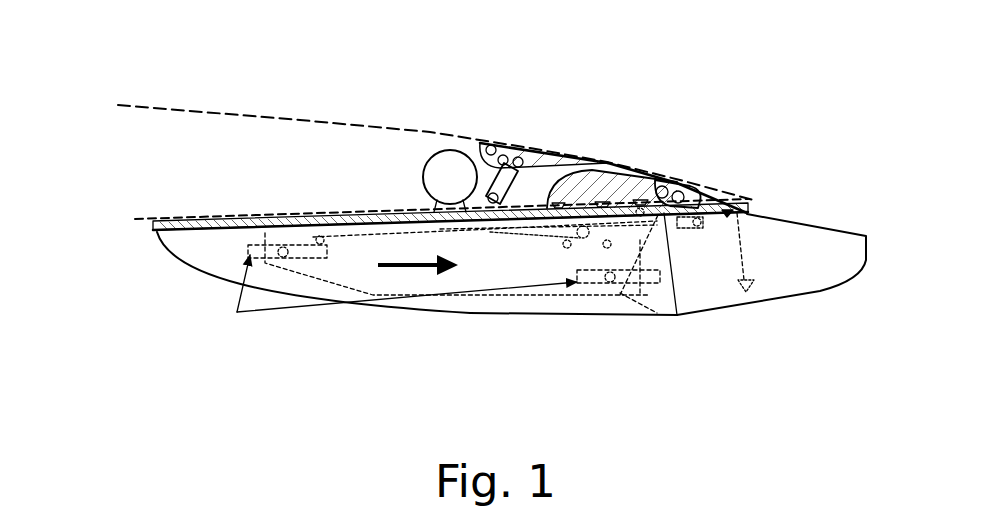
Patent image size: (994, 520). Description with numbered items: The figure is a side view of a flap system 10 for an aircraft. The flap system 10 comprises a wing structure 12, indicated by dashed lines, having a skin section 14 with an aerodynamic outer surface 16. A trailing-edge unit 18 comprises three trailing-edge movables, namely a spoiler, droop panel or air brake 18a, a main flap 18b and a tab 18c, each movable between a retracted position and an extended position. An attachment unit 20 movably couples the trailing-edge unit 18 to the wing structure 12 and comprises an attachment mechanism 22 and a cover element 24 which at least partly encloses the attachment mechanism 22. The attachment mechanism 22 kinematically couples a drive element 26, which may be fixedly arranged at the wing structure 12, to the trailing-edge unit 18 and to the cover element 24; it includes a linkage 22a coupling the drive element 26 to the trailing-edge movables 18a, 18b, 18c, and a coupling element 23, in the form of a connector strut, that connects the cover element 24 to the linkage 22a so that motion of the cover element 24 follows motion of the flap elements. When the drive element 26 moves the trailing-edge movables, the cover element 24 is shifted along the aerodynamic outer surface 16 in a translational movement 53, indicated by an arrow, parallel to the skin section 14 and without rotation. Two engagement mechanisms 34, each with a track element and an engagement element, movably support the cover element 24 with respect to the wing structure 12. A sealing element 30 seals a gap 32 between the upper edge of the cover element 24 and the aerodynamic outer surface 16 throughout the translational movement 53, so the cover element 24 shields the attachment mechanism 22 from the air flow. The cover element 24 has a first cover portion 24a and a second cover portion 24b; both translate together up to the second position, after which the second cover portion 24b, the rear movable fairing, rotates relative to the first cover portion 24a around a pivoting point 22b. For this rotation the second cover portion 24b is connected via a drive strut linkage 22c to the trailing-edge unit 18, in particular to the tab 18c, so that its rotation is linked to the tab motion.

The flap system 10 is at (287, 96).
The wing structure 12 is at (352, 128).
The skin section 14 is at (198, 222).
The aerodynamic outer surface 16 is at (182, 236).
The trailing-edge unit 18 is at (671, 136).
The spoiler, droop panel or air brake 18a is at (543, 157).
The main flap 18b is at (645, 172).
The tab 18c is at (697, 182).
The attachment unit 20 is at (558, 315).
The attachment mechanism 22 is at (477, 234).
The linkage 22a is at (490, 222).
The pivoting point 22b is at (655, 220).
The drive strut linkage 22c is at (742, 266).
The coupling element 23 is at (353, 242).
The cover element 24 is at (684, 279).
The first cover portion 24a is at (565, 316).
The second cover portion 24b is at (802, 245).
The drive element 26 is at (450, 160).
The sealing element 30 is at (253, 217).
The gap 32 is at (147, 229).
The engagement mechanism 34 is at (237, 312).
The translational movement 53 is at (417, 268).